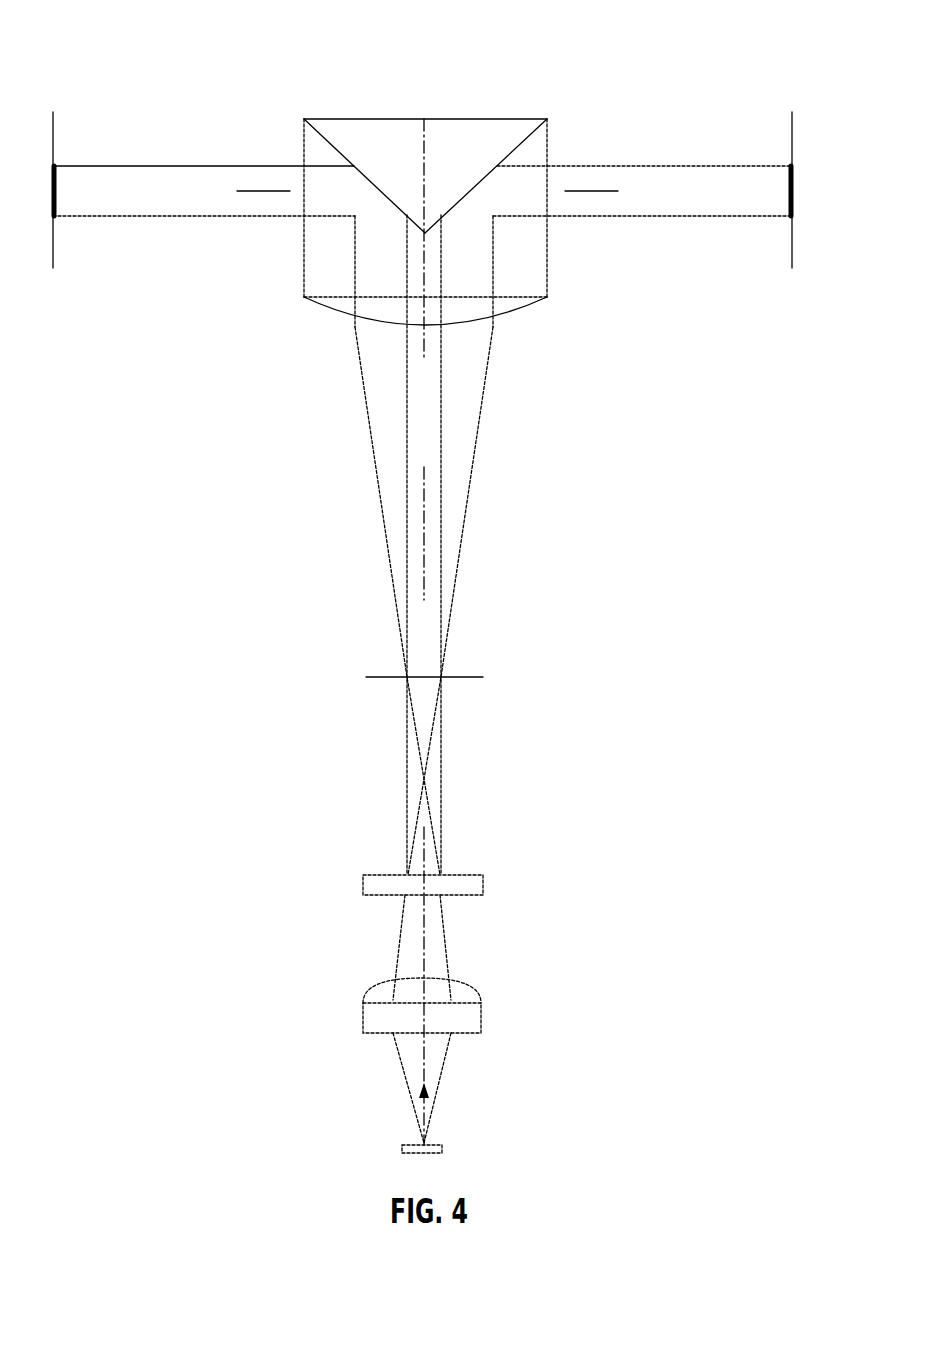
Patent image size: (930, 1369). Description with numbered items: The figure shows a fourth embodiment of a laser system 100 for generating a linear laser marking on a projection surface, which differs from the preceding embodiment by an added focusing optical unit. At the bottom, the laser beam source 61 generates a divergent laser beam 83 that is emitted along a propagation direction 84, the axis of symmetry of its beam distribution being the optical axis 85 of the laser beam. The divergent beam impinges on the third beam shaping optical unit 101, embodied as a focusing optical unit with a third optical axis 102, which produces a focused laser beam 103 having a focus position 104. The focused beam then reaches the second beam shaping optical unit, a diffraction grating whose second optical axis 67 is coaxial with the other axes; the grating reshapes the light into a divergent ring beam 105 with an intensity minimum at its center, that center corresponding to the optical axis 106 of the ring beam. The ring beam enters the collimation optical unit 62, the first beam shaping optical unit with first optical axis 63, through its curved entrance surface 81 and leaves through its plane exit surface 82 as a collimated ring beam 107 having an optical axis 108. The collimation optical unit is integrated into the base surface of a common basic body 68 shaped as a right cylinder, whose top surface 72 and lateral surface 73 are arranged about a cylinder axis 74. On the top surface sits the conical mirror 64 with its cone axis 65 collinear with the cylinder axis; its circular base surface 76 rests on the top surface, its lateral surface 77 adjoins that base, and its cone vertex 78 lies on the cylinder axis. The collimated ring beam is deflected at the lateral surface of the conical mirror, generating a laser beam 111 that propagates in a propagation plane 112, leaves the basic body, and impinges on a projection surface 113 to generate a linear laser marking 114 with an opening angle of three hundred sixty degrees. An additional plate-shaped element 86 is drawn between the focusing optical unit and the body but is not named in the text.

The laser beam source 61 is at (348, 1146).
The collimation optical unit 62 is at (570, 308).
The first optical axis 63 is at (426, 348).
The conical mirror 64 is at (422, 95).
The cone axis 65 is at (424, 148).
The second optical axis 67 is at (425, 850).
The basic body 68 is at (285, 291).
The top surface 72 is at (540, 115).
The lateral surface 73 is at (550, 276).
The cylinder axis 74 is at (424, 268).
The base surface 76 is at (330, 118).
The lateral surface 77 is at (461, 192).
The cone vertex 78 is at (423, 215).
The curved entrance surface 81 is at (531, 312).
The plane exit surface 82 is at (331, 300).
The divergent laser beam 83 is at (400, 1072).
The propagation direction 84 is at (419, 1118).
The optical axis of the laser beam 85 is at (424, 1053).
The optical filter 86 is at (265, 881).
The laser system 100 is at (703, 1090).
The third beam shaping optical unit 101 is at (348, 1004).
The third optical axis 102 is at (425, 986).
The focused laser beam 103 is at (398, 942).
The focus position 104 is at (449, 677).
The ring beam 105 is at (370, 444).
The optical axis of the ring beam 106 is at (425, 542).
The collimated ring beam 107 is at (352, 236).
The optical axis of the collimated ring beam 108 is at (428, 245).
The laser beam 111 is at (202, 165).
The propagation plane 112 is at (266, 182).
The projection surface 113 is at (60, 126).
The linear laser marking 114 is at (57, 190).